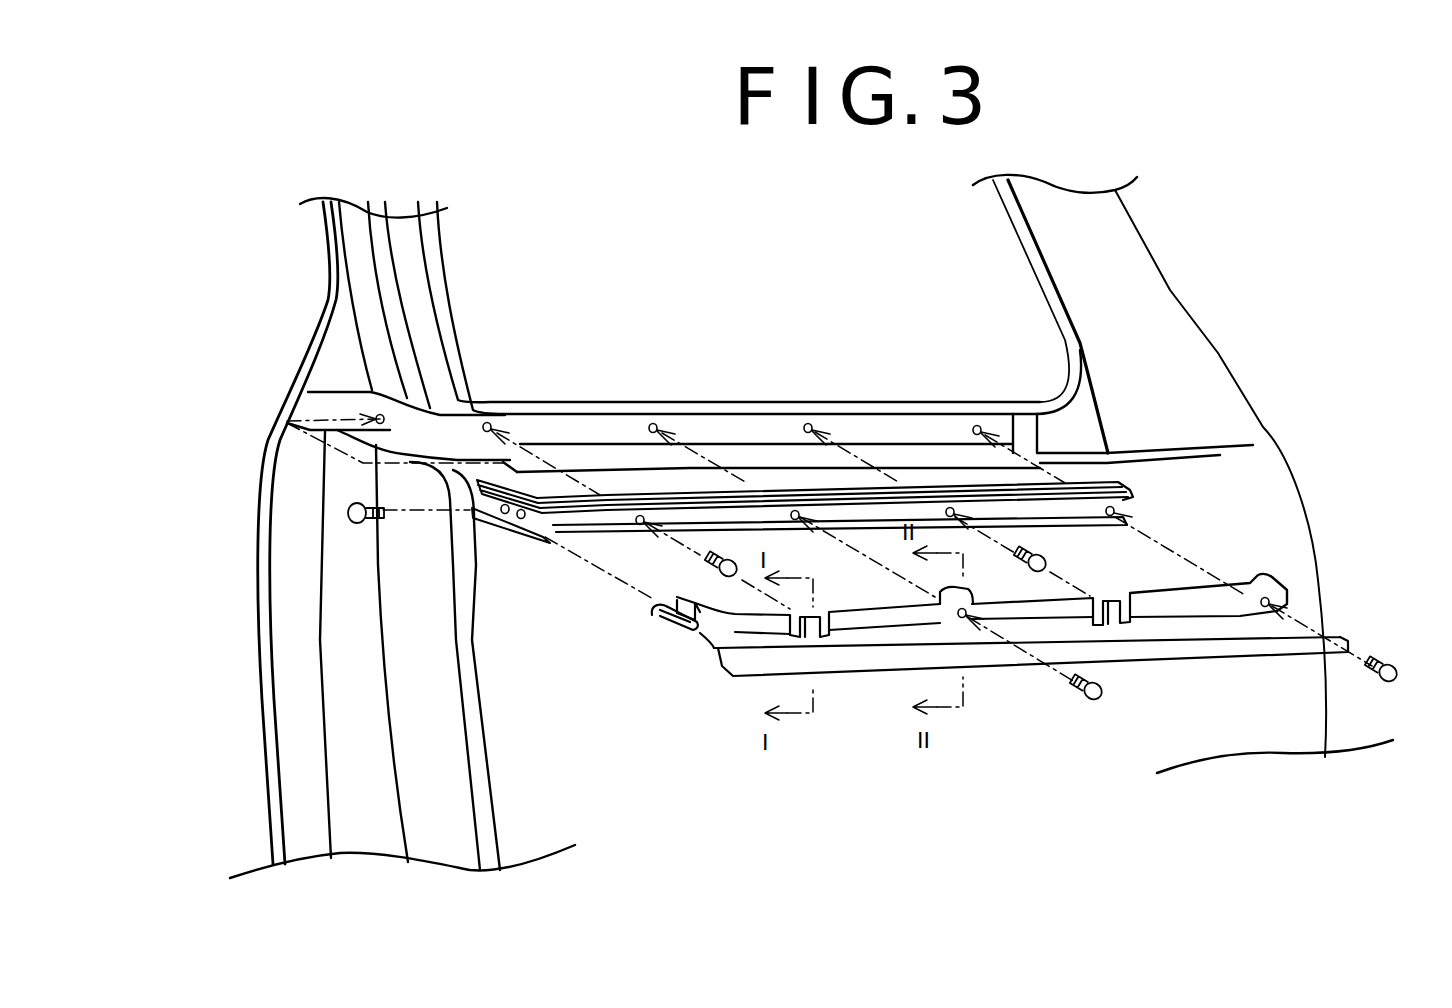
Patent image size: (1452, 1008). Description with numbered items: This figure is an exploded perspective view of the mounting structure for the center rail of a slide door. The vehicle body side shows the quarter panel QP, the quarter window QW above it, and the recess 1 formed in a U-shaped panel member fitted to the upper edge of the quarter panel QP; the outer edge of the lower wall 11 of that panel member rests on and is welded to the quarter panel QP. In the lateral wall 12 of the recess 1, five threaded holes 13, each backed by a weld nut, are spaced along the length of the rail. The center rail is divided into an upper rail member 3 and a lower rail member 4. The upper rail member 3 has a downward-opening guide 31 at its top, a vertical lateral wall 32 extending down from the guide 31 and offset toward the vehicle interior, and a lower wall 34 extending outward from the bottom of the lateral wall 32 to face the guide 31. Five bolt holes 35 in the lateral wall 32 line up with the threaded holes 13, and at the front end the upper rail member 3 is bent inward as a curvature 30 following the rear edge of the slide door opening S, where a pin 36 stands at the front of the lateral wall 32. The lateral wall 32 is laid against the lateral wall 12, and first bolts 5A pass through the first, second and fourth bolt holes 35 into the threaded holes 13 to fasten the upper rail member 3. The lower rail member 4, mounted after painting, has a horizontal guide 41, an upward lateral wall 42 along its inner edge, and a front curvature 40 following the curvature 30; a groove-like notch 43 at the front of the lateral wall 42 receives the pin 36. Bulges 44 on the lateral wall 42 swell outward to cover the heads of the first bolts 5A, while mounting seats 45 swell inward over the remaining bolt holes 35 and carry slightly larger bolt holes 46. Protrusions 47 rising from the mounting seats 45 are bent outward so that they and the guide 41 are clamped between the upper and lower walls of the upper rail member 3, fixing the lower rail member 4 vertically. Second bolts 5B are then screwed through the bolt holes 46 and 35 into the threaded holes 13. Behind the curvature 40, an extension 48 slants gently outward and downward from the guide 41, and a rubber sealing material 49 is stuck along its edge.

The opening of the slide door S is at (291, 326).
The recess 1 is at (560, 428).
The lower wall 11 is at (583, 455).
The guide 31 is at (620, 497).
The lateral wall 32 is at (670, 520).
The bolt holes 35 is at (792, 510).
The lower wall 34 is at (857, 530).
The lateral wall 12 is at (896, 430).
The threaded holes 13 is at (978, 428).
The quarter window QW is at (998, 325).
The quarter panel QP is at (1230, 505).
The protrusions 47 is at (1260, 580).
The pin 36 is at (507, 510).
The curvature 30 is at (523, 533).
The upper rail member 3 is at (530, 572).
The first bolts 5A is at (658, 622).
The notch 43 is at (715, 622).
The curvature 40 is at (722, 664).
The lower rail member 4 is at (735, 698).
The bulges 44 is at (815, 630).
The mounting seats 45 is at (962, 617).
The bolt holes 46 is at (963, 618).
The second bolts 5B is at (1092, 700).
The guide 41 is at (1103, 615).
The lateral wall 42 is at (1150, 612).
The extension 48 is at (1203, 630).
The rubber sealing material 49 is at (1277, 623).